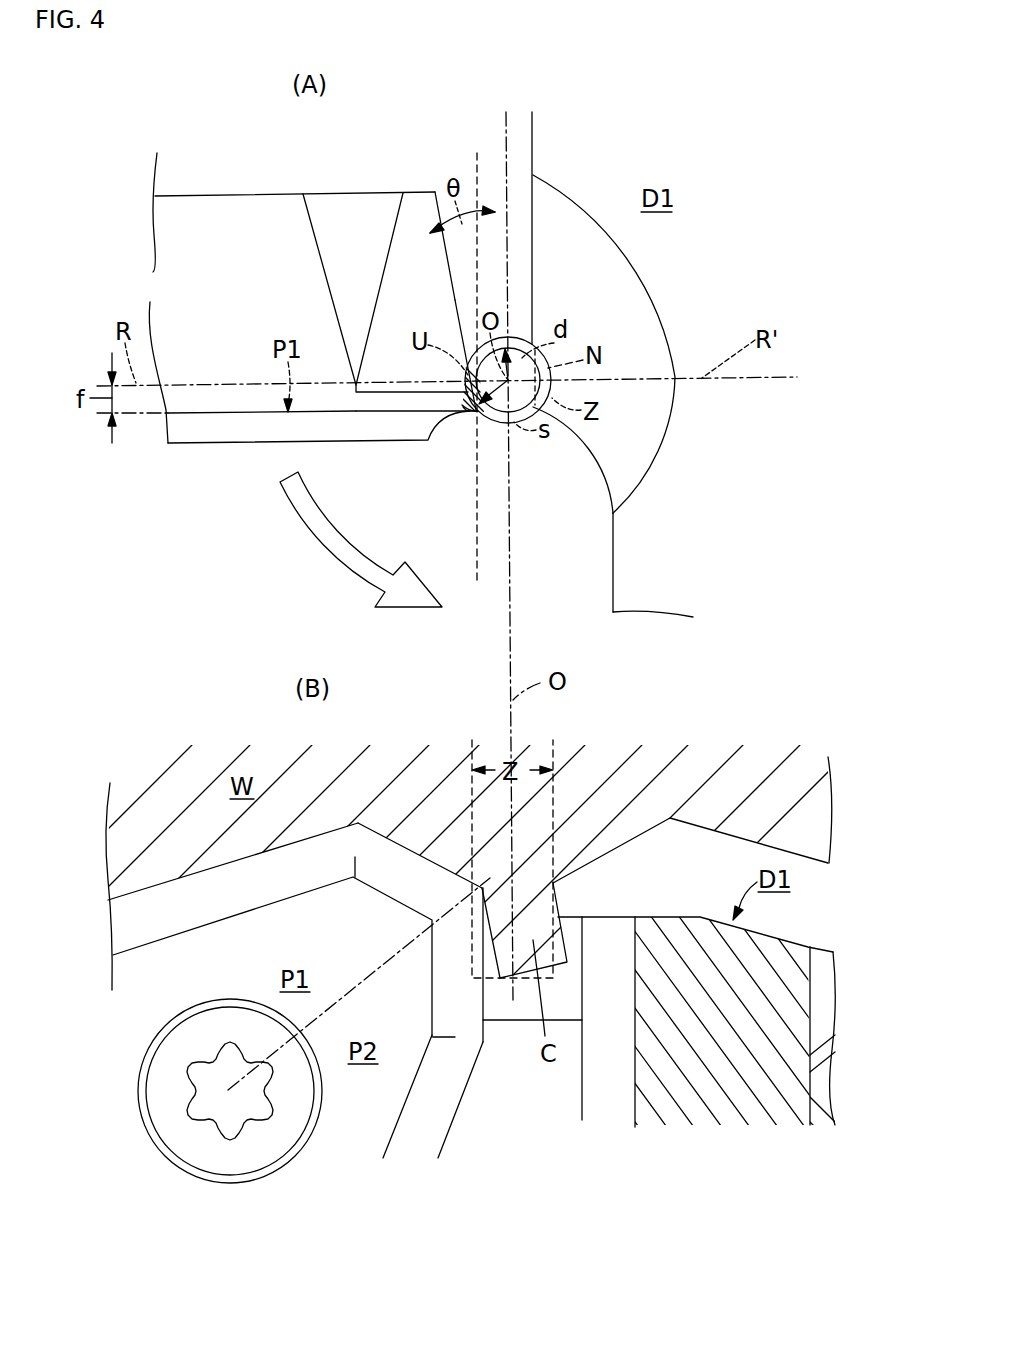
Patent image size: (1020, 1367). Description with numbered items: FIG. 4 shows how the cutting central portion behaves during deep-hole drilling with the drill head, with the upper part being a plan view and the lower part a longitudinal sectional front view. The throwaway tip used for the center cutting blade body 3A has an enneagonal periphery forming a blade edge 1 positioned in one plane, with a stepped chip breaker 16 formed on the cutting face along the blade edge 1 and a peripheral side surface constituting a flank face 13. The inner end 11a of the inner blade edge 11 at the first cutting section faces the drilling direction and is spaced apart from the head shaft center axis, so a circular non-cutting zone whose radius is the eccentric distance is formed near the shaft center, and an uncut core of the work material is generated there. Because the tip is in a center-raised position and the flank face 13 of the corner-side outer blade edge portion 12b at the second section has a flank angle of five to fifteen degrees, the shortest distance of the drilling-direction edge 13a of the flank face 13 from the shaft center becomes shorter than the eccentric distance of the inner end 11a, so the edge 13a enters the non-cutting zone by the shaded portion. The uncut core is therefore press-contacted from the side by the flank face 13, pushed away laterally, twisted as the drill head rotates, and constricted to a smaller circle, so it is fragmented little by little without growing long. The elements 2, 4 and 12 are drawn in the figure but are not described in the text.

The blade edge 1 is at (186, 426).
The workpiece 2 is at (600, 557).
The center cutting blade body 3A is at (172, 221).
The clamping screw 4 is at (297, 1105).
The inner blade edge 11 is at (378, 415).
The inner end of the inner blade edge 11a is at (474, 410).
The lower face / cutting edge 12 is at (221, 415).
The corner-side outer blade edge portion 12b is at (490, 1000).
The flank face 13 is at (470, 300).
The drilling-direction edge of the flank face 13a is at (452, 265).
The chip breaker 16 is at (268, 428).